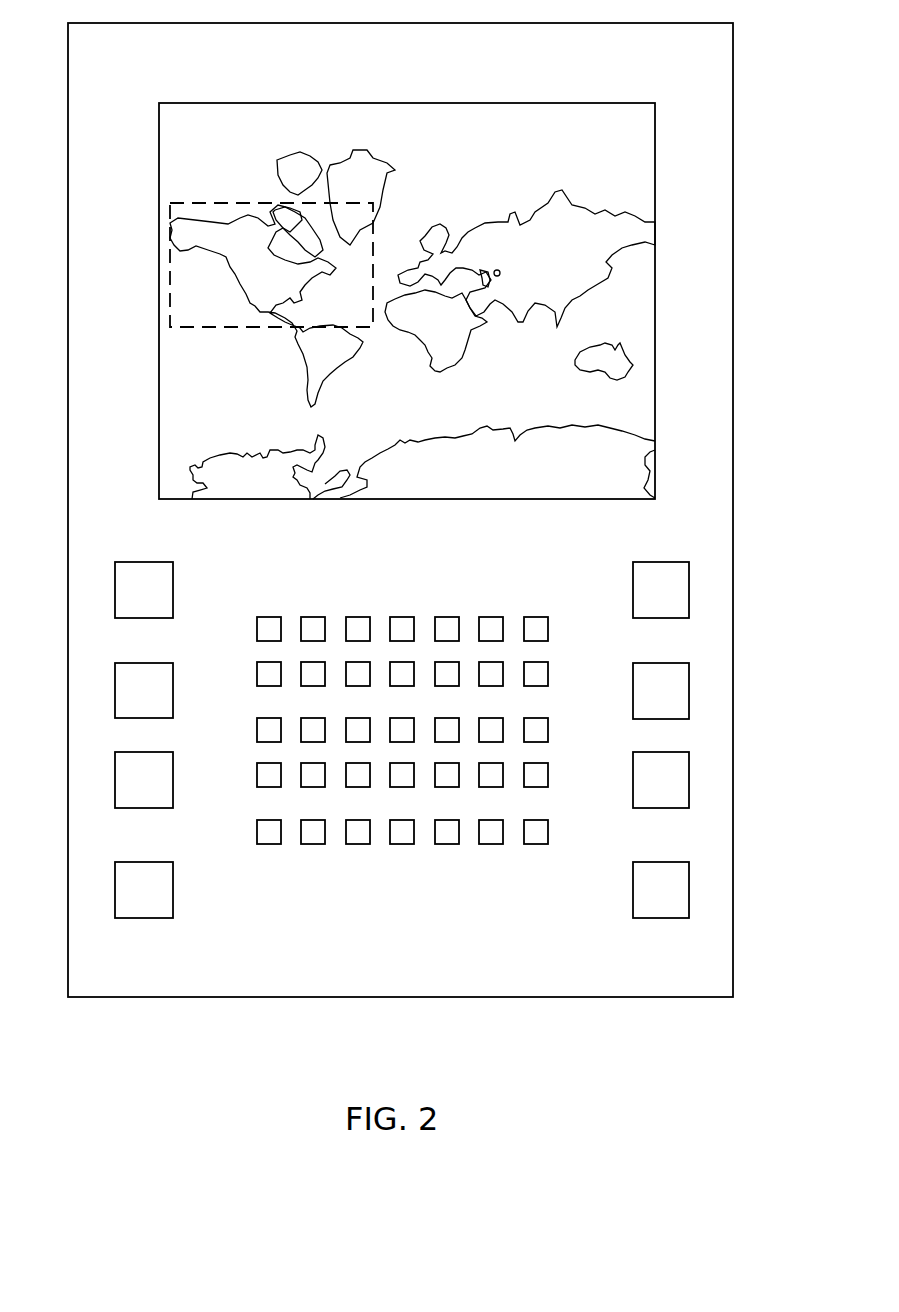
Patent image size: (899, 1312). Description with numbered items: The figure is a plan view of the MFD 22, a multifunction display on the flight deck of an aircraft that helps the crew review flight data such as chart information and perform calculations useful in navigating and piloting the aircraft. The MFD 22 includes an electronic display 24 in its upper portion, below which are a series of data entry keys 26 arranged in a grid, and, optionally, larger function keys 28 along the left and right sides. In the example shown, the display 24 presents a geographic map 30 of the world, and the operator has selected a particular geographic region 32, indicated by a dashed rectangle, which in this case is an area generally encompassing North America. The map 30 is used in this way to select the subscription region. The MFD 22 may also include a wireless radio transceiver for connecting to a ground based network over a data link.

The MFD 22 is at (697, 246).
The electronic display 24 is at (656, 113).
The data entry keys 26 is at (496, 857).
The function keys 28 is at (675, 780).
The geographic map 30 is at (205, 398).
The geographic region 32 is at (171, 263).